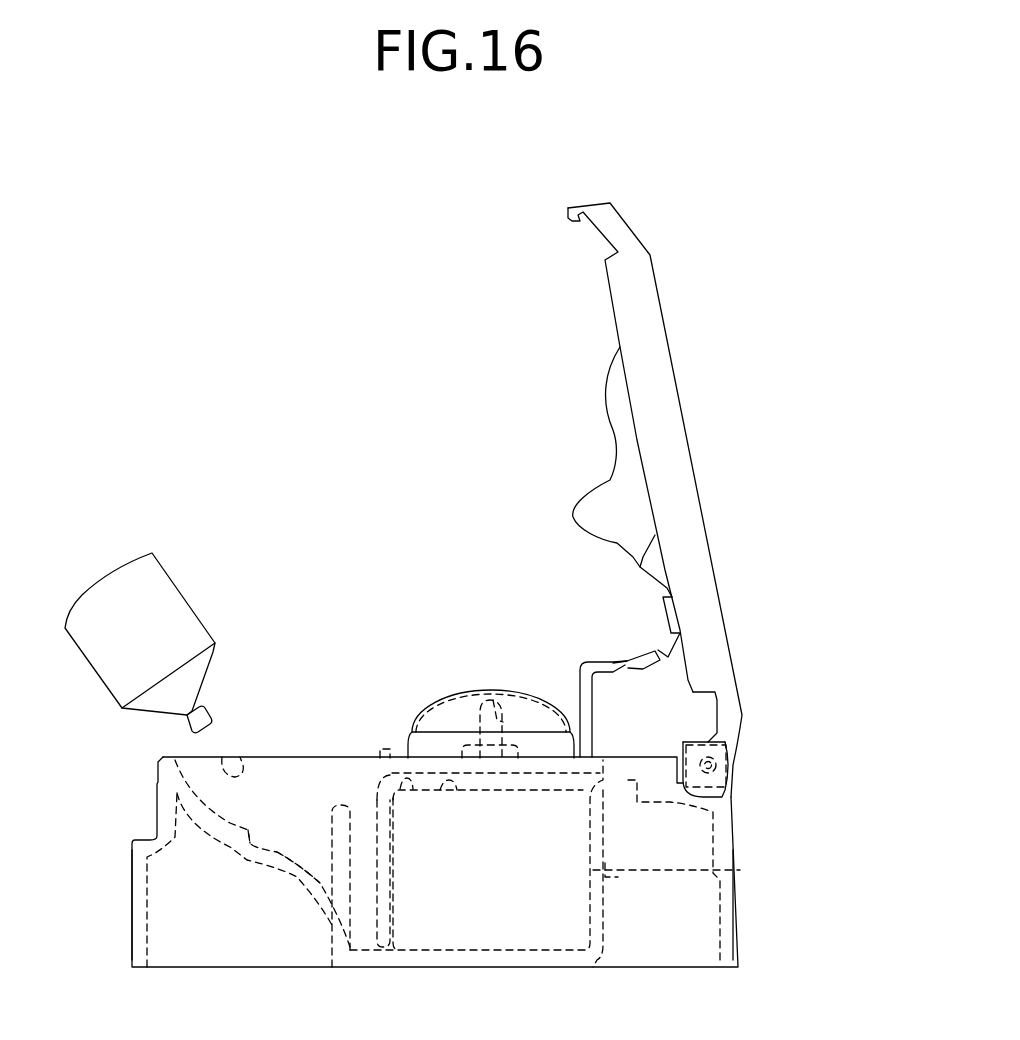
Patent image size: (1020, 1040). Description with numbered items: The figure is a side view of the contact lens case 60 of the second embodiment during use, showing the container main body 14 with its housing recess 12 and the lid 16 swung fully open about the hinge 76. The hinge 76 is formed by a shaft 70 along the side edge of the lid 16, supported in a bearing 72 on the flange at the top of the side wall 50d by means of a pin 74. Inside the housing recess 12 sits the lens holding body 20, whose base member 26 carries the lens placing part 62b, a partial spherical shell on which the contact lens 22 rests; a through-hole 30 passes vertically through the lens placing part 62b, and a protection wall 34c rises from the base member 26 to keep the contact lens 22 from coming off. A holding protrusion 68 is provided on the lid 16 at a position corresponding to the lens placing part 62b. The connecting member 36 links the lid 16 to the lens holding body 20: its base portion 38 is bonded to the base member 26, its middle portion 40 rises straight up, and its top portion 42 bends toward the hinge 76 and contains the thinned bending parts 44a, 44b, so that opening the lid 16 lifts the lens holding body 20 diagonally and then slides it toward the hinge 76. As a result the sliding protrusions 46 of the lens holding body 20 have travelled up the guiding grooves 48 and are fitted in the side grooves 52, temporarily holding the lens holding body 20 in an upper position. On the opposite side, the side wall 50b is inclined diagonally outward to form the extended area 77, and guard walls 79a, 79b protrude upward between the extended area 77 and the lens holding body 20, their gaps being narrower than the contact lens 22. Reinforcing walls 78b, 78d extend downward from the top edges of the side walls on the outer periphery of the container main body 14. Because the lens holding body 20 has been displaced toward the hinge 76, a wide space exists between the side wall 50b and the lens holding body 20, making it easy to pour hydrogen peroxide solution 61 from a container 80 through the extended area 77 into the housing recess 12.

The housing recess 12 is at (740, 870).
The container main body 14 is at (742, 950).
The lid 16 is at (680, 482).
The lens holding body 20 is at (537, 792).
The contact lens 22 is at (455, 718).
The base member 26 is at (495, 783).
The through-hole 30 is at (493, 688).
The protection wall 34c is at (463, 748).
The connecting member 36 is at (708, 699).
The base portion 38 is at (597, 753).
The middle portion 40 is at (587, 710).
The top portion 42 is at (653, 658).
The bending part 44a is at (627, 660).
The bending part 44b is at (668, 648).
The sliding protrusion 46 is at (408, 788).
The guiding groove 48 is at (390, 880).
The side wall 50b is at (248, 860).
The side wall 50d is at (598, 908).
The side groove 52 is at (454, 790).
The contact lens case 60 is at (638, 464).
The hydrogen peroxide solution 61 is at (213, 743).
The lens placing part 62b is at (535, 712).
The holding protrusion 68 is at (600, 520).
The shaft 70 is at (727, 750).
The bearing 72 is at (720, 792).
The pin 74 is at (717, 765).
The hinge 76 is at (777, 762).
The extended area 77 is at (277, 810).
The reinforcing wall 78b is at (138, 917).
The reinforcing wall 78d is at (727, 917).
The guard wall 79a is at (345, 860).
The guard wall 79b is at (327, 850).
The container 80 is at (165, 607).